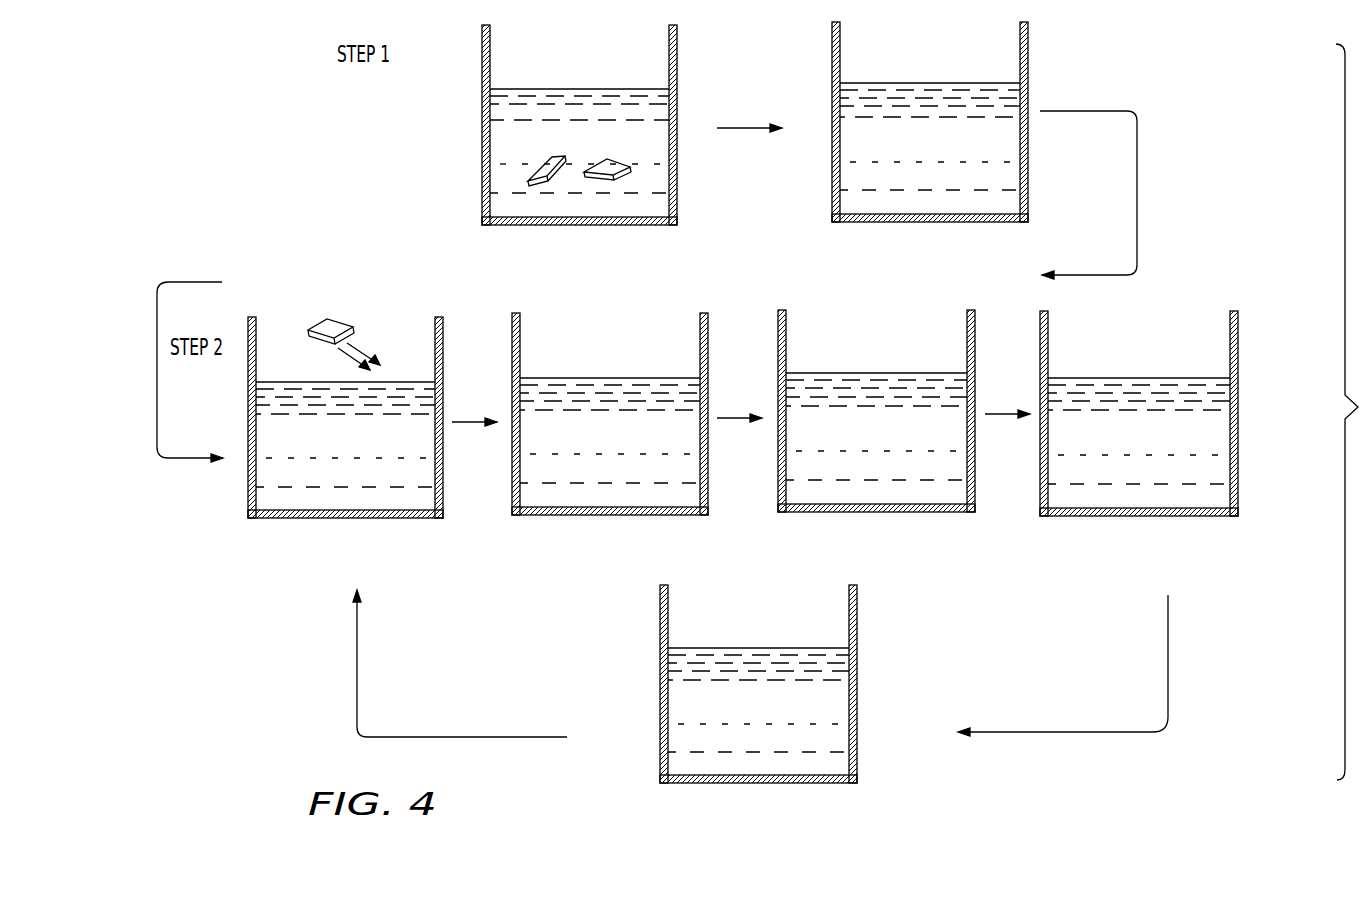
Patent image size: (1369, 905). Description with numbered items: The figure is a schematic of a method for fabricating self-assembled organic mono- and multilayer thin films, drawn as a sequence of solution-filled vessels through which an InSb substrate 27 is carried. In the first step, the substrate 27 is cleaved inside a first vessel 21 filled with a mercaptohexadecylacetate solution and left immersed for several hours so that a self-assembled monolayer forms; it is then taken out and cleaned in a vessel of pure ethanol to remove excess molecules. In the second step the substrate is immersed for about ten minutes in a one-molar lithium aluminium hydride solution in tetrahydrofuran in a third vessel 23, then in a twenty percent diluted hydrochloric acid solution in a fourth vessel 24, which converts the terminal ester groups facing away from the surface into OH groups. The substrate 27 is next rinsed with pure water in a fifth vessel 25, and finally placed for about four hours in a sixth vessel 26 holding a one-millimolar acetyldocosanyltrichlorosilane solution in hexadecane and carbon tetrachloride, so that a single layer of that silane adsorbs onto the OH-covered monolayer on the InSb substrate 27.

The first vessel 21 is at (482, 100).
The third vessel 23 is at (443, 353).
The fourth vessel 24 is at (708, 353).
The fifth vessel 25 is at (975, 350).
The sixth vessel 26 is at (1238, 352).
The InSb substrate 27 is at (353, 327).